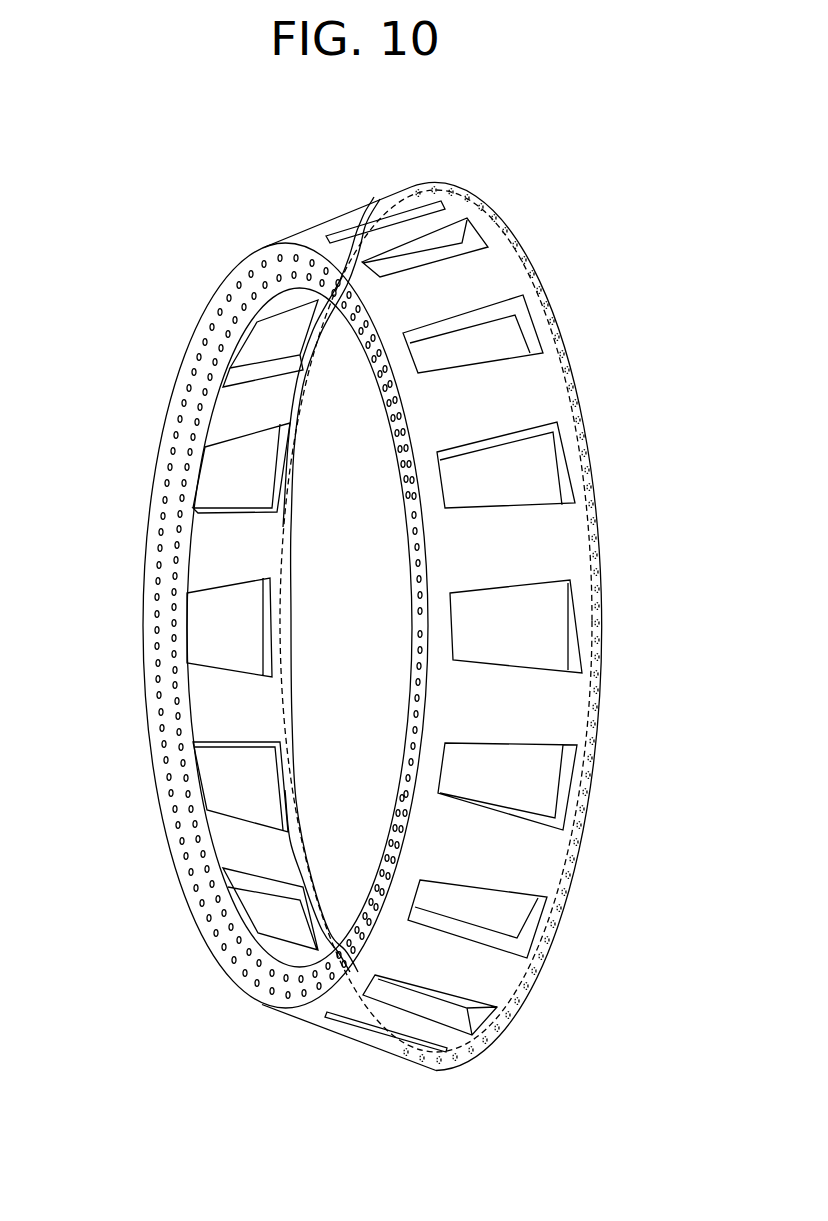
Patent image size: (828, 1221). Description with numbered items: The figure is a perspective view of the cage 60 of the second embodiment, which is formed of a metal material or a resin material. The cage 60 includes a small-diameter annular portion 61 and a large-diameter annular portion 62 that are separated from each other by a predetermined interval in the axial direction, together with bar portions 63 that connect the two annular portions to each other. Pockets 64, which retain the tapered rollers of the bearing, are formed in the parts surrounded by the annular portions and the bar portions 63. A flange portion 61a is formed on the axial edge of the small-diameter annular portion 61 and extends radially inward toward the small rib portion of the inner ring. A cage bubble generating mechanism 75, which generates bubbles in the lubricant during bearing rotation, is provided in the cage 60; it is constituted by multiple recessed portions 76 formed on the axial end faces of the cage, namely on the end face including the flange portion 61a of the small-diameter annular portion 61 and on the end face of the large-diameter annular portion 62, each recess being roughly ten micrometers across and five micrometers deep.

The cage 60 is at (335, 215).
The small-diameter annular portion 61 is at (207, 317).
The flange portion 61a is at (165, 465).
The large-diameter annular portion 62 is at (500, 208).
The bar portions 63 is at (468, 272).
The pockets 64 is at (479, 347).
The cage bubble generating mechanism 75 is at (604, 609).
The recessed portions 76 is at (547, 292).